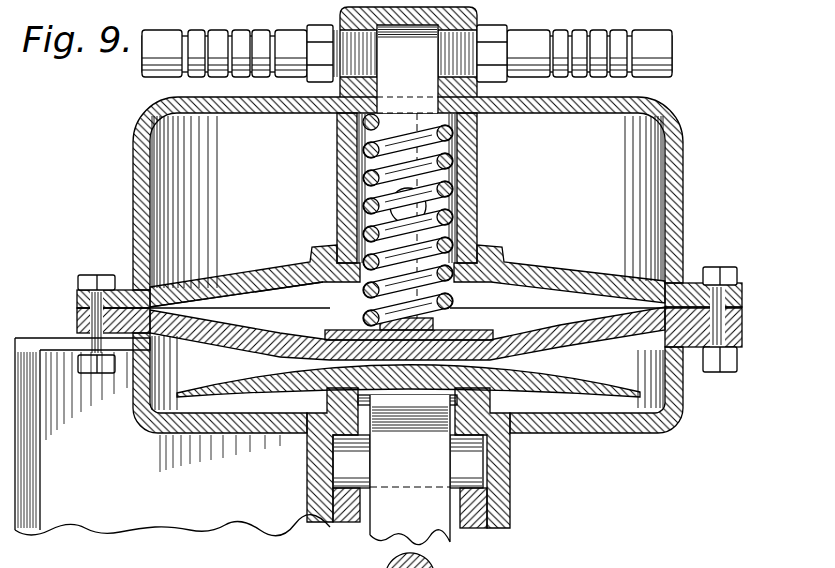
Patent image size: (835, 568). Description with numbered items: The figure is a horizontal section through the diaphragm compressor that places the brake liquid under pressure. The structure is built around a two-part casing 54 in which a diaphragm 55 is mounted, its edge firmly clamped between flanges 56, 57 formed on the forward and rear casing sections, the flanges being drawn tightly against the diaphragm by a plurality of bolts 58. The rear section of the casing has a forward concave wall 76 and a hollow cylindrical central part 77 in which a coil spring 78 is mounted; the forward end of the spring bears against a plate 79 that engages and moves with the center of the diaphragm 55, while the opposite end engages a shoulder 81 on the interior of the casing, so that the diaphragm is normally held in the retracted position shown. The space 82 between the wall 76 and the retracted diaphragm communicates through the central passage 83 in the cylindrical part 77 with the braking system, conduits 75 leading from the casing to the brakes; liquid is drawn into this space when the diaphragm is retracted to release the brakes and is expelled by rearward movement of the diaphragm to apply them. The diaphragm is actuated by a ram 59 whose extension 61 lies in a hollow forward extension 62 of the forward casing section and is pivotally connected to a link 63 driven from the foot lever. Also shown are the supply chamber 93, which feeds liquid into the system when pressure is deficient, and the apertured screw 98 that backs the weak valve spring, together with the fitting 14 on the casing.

The inlet fitting body 14 is at (440, 22).
The conduits 75 is at (253, 33).
The chamber 93 is at (133, 200).
The shoulder 81 is at (477, 132).
The coil spring 78 is at (337, 158).
The cylindrical central part 77 is at (337, 187).
The central passage 83 is at (430, 200).
The apertured screw 98 is at (455, 205).
The flange 57 is at (78, 300).
The flange 56 is at (68, 337).
The space 82 is at (257, 297).
The forward concave wall 76 is at (280, 268).
The plate 79 is at (340, 330).
The diaphragm 55 is at (598, 323).
The bolts 58 is at (725, 268).
The two-part casing 54 is at (662, 430).
The ram 59 is at (573, 383).
The hollow forward extension 62 is at (510, 482).
The extension 61 is at (477, 508).
The link 63 is at (432, 525).